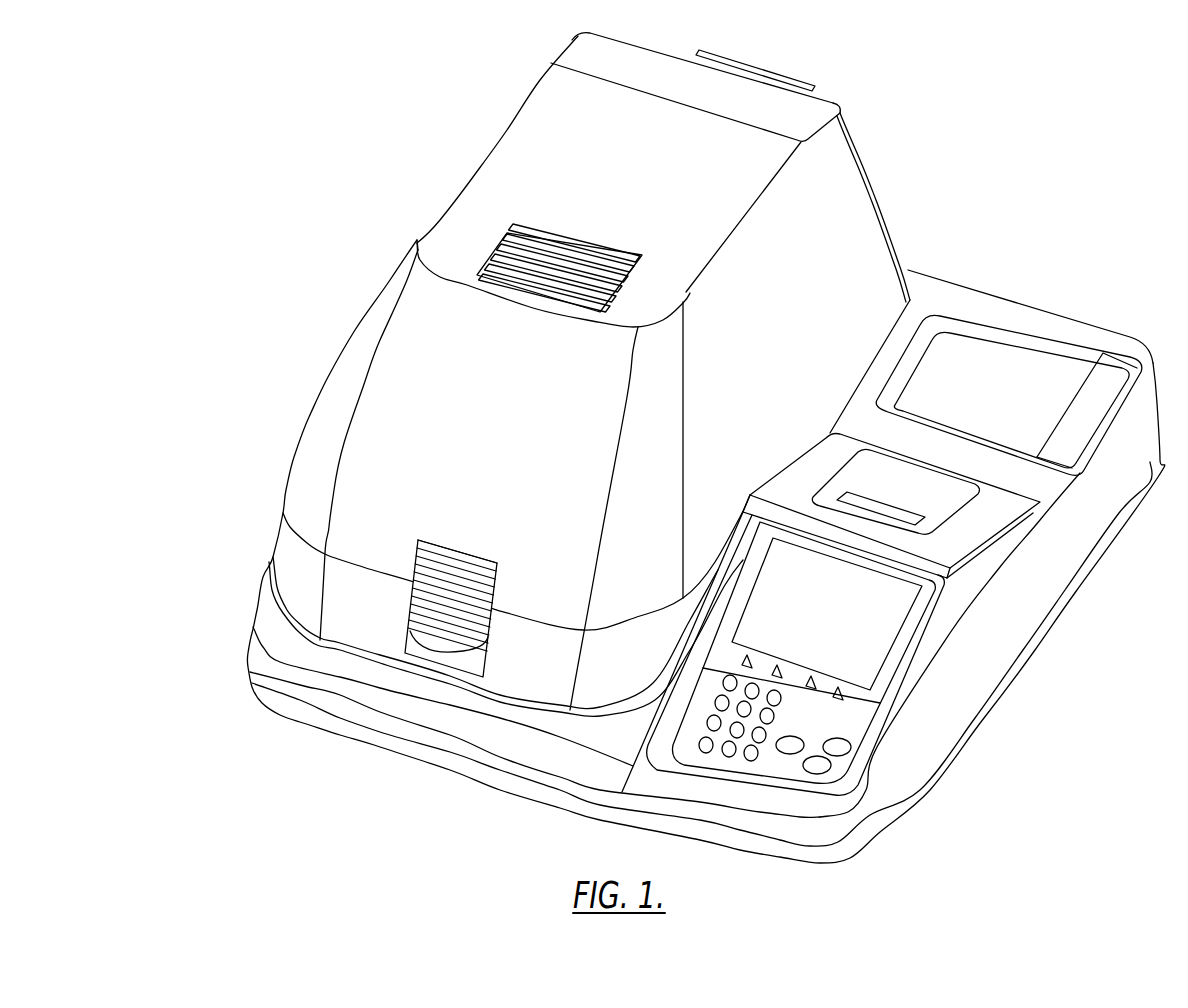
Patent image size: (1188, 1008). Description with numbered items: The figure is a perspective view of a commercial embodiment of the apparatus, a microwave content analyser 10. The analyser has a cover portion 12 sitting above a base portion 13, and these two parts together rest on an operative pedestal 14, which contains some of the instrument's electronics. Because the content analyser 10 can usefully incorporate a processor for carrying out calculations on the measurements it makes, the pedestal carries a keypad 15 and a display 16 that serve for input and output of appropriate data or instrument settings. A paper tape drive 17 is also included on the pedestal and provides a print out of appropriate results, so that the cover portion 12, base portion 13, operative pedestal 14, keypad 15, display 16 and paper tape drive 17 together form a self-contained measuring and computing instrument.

The microwave content analyser 10 is at (662, 448).
The cover portion 12 is at (489, 420).
The base portion 13 is at (365, 620).
The operative pedestal 14 is at (250, 662).
The keypad 15 is at (710, 703).
The display 16 is at (831, 623).
The paper tape drive 17 is at (922, 503).